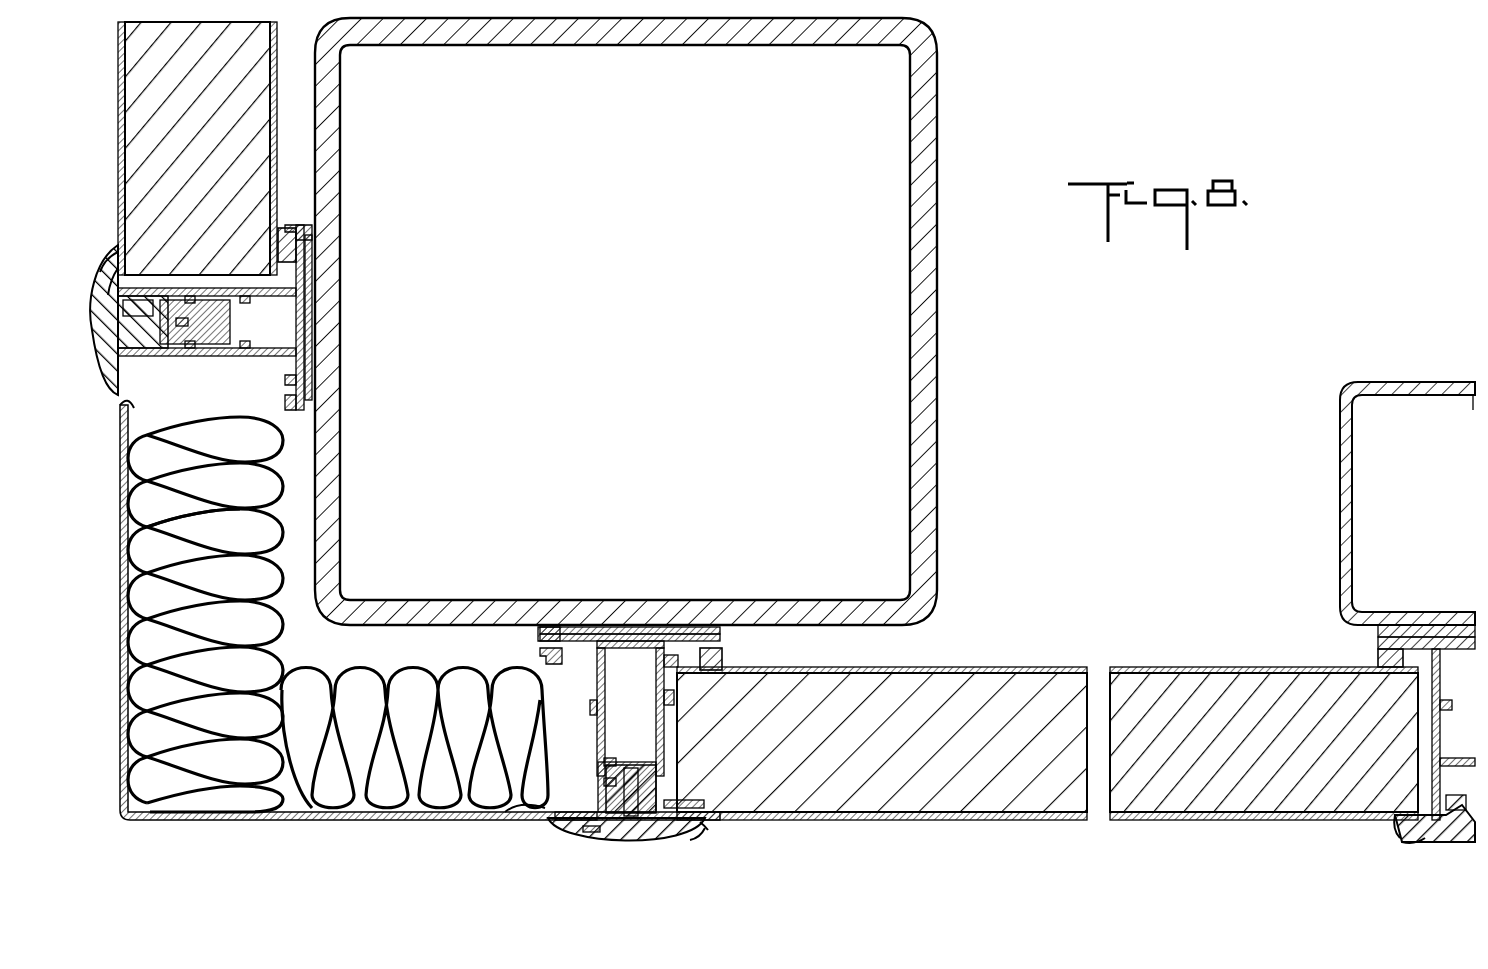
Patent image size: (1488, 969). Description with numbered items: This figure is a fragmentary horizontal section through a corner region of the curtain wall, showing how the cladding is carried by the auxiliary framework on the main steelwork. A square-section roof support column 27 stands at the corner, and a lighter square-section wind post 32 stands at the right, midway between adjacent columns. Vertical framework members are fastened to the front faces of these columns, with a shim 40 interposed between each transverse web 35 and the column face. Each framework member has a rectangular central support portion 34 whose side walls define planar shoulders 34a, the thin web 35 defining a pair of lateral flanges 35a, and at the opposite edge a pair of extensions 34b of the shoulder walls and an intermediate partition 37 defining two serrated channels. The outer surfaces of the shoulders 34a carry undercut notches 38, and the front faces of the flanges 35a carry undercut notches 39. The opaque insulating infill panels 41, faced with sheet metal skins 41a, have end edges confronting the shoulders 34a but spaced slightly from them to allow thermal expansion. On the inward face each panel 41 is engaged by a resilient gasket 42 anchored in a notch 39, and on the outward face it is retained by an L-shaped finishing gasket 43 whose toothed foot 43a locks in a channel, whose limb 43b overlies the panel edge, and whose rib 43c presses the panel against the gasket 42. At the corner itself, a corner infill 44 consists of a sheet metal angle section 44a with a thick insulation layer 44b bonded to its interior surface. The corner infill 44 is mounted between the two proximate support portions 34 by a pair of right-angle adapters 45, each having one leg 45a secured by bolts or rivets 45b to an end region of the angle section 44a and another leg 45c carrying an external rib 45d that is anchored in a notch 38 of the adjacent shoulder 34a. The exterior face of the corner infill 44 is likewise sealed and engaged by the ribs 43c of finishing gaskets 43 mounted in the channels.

The roof support column 27 is at (937, 468).
The wind post 32 is at (1342, 400).
The central support portion 34 is at (600, 641).
The shoulder 34a is at (597, 690).
The extension 34b is at (700, 806).
The transverse web 35 is at (305, 326).
The lateral flange 35a is at (311, 280).
The intermediate partition 37 is at (628, 822).
The undercut notch 38 is at (655, 748).
The undercut notch 39 is at (545, 660).
The shim 40 is at (312, 232).
The infill panel 41 is at (745, 452).
The sheet metal skin 41a is at (121, 140).
The resilient gasket 42 is at (290, 228).
The finishing gasket 43 is at (97, 310).
The foot 43a is at (165, 306).
The limb 43b is at (106, 265).
The rib 43c is at (112, 250).
The corner infill 44 is at (395, 636).
The angle section 44a is at (120, 772).
The insulation layer 44b is at (275, 533).
The adapter 45 is at (163, 373).
The leg 45a is at (128, 415).
The bolt or rivet 45b is at (580, 836).
The leg 45c is at (602, 782).
The rib 45d is at (602, 762).